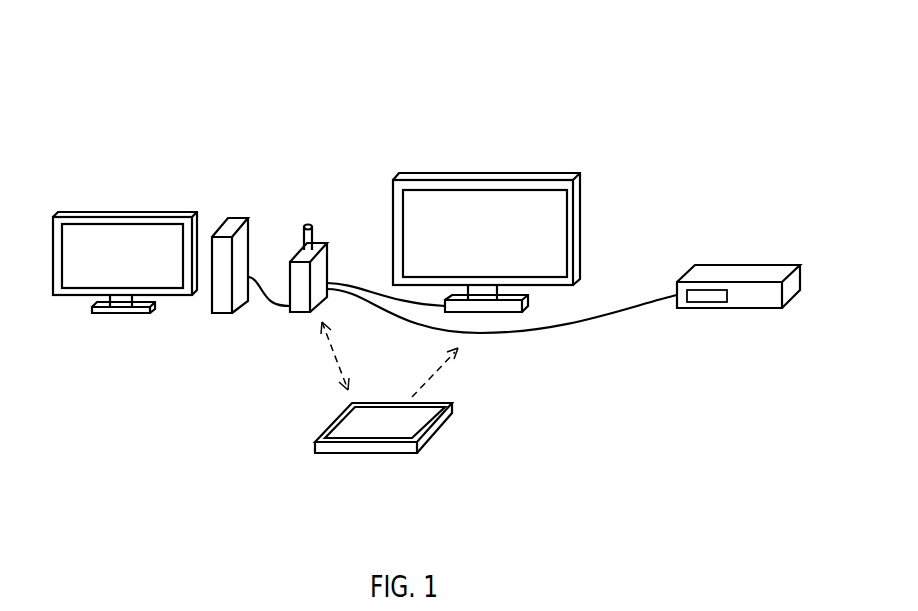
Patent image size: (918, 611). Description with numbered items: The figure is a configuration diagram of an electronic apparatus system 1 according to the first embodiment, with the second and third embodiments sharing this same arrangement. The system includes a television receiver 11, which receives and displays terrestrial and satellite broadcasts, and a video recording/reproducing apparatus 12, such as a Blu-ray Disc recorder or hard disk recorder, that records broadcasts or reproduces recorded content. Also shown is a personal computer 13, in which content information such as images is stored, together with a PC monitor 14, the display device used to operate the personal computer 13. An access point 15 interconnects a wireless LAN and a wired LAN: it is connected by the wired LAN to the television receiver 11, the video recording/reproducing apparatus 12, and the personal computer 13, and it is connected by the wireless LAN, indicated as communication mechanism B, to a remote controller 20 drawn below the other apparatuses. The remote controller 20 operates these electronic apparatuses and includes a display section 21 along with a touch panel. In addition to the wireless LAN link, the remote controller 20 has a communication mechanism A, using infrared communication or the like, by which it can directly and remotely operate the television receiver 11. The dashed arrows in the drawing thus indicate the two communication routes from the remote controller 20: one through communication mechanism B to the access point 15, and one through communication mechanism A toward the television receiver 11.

The electronic apparatus system 1 is at (558, 48).
The television receiver 11 is at (488, 178).
The video recording/reproducing apparatus 12 is at (745, 265).
The personal computer 13 is at (238, 217).
The PC monitor 14 is at (125, 212).
The access point 15 is at (318, 240).
The remote controller 20 is at (368, 454).
The display section 21 is at (440, 423).
The communication mechanism A is at (440, 370).
The communication mechanism B is at (333, 349).